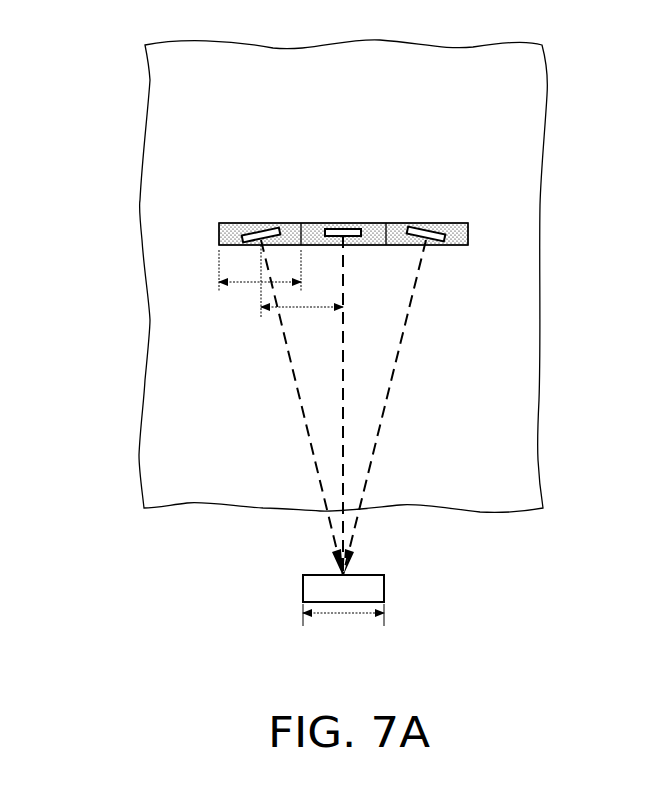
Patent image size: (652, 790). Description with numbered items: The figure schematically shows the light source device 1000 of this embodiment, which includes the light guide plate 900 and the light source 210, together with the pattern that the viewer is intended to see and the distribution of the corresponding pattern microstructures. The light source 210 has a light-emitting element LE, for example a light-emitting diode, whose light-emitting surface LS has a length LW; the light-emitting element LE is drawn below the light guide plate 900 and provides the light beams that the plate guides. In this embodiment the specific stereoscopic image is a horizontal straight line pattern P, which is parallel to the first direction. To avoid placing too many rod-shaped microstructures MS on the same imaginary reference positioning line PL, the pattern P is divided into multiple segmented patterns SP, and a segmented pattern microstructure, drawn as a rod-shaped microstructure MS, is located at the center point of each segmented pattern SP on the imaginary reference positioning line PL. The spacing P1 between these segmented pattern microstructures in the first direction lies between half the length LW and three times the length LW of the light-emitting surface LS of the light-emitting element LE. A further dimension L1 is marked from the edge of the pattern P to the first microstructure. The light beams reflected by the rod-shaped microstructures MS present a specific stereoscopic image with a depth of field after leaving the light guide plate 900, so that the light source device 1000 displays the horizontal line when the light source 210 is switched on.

The light guide plate 900 is at (521, 96).
The imaginary reference positioning line PL is at (638, 234).
The pattern P is at (452, 170).
The segmented pattern SP is at (395, 222).
The rod-shaped microstructure MS is at (440, 247).
The length L1 is at (243, 285).
The spacing P1 is at (302, 291).
The light-emitting element LE is at (370, 590).
The light-emitting surface LS is at (367, 573).
The length of the light-emitting surface LW is at (343, 629).
The light source 210 is at (310, 640).
The light source device 1000 is at (622, 568).